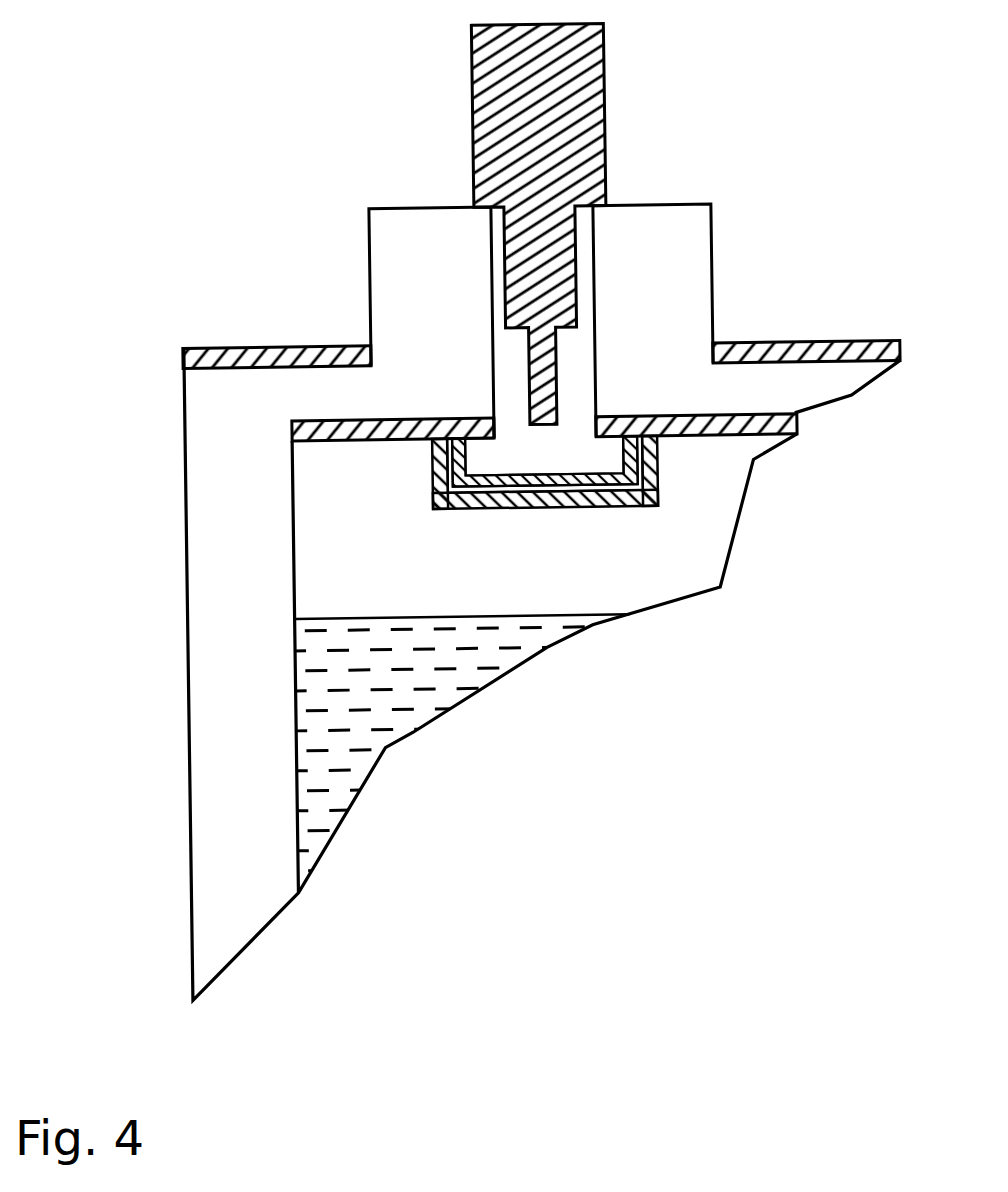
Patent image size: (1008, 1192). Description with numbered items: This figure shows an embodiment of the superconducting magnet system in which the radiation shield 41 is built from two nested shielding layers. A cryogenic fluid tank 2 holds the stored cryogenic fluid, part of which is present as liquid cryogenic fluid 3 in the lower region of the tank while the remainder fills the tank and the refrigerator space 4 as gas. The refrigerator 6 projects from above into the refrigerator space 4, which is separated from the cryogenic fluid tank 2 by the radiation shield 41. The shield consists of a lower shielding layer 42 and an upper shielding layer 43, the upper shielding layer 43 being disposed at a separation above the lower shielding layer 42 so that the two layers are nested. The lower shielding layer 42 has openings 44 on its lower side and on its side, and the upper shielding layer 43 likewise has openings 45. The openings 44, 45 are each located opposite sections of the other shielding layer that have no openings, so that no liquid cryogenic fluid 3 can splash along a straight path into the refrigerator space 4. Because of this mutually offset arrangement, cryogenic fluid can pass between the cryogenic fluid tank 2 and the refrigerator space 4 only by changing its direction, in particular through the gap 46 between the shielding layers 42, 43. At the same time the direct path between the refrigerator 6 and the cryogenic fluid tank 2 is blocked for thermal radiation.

The cryogenic fluid tank 2 is at (323, 580).
The liquid cryogenic fluid 3 is at (323, 708).
The refrigerator space 4 is at (577, 354).
The refrigerator 6 is at (570, 155).
The radiation shield 41 is at (643, 513).
The lower shielding layer 42 is at (583, 502).
The upper shielding layer 43 is at (617, 482).
The openings 44 is at (477, 510).
The openings 45 is at (478, 437).
The gap 46 is at (505, 476).